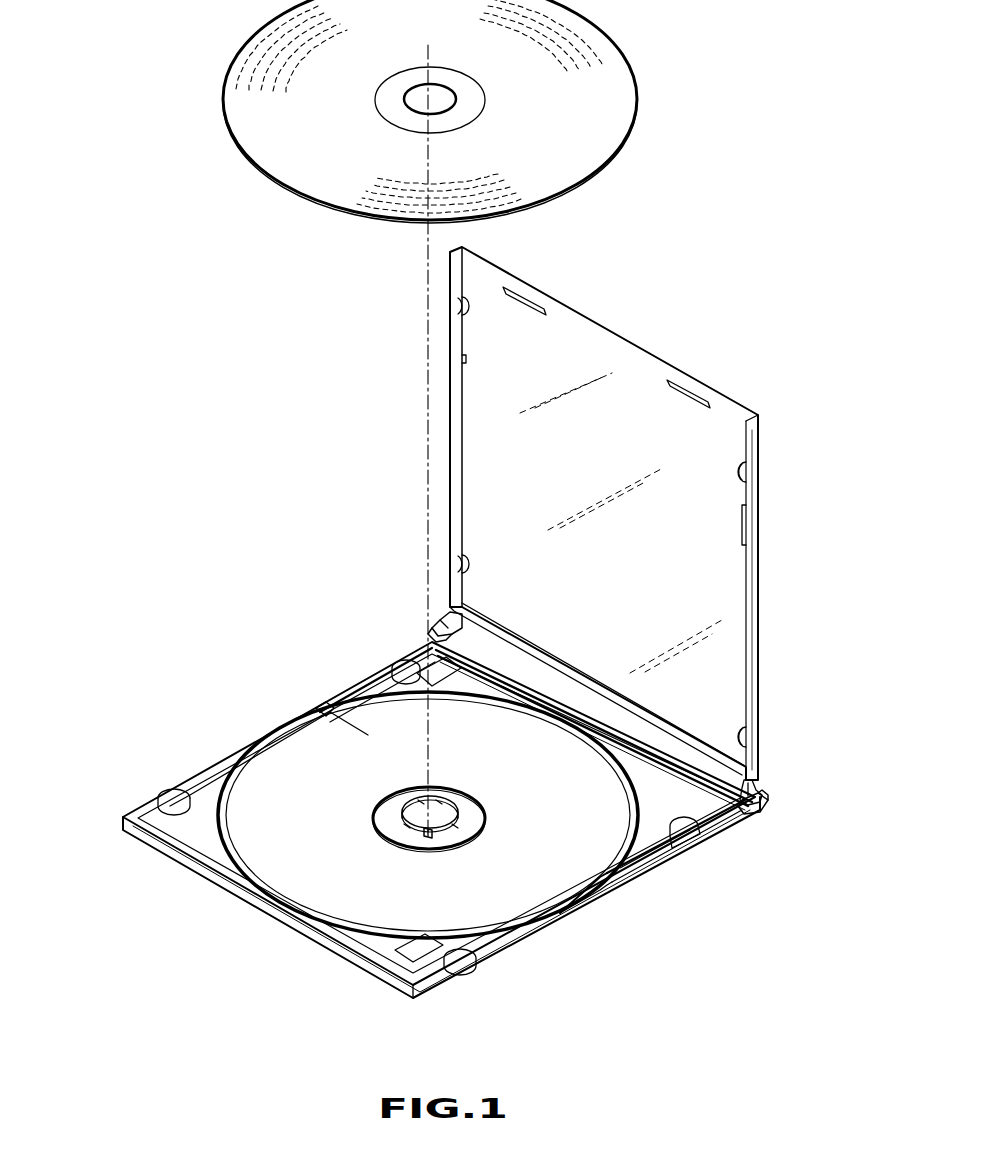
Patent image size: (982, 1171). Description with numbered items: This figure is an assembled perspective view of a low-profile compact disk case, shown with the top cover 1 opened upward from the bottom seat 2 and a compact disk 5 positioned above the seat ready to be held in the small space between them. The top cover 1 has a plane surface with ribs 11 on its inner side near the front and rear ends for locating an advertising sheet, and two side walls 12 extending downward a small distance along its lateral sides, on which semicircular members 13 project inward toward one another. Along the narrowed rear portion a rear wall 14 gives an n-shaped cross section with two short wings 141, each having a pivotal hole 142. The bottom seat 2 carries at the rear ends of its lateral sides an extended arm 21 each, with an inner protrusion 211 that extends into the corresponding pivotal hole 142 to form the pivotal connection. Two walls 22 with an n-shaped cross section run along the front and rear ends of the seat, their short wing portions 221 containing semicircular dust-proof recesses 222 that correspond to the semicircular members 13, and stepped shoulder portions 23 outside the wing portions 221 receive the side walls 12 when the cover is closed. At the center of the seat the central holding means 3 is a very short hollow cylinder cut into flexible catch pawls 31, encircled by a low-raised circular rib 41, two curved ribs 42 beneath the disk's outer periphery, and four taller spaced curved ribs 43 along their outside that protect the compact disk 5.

The top cover 1 is at (607, 526).
The ribs 11 is at (690, 384).
The side walls 12 is at (750, 517).
The semicircular members 13 is at (748, 473).
The rear wall 14 is at (762, 793).
The short wings 141 is at (456, 615).
The pivotal hole 142 is at (440, 629).
The bottom seat 2 is at (492, 750).
The extended arm 21 is at (752, 815).
The protrusion 211 is at (770, 800).
The walls 22 is at (655, 862).
The wing portions 221 is at (675, 853).
The dust-proof recesses 222 is at (690, 828).
The stepped shoulder portions 23 is at (630, 878).
The central holding means 3 is at (400, 794).
The flexible catch pawls 31 is at (424, 838).
The circular rib 41 is at (375, 816).
The curved ribs 42 is at (322, 712).
The spaced curved ribs 43 is at (358, 700).
The compact disk 5 is at (620, 104).